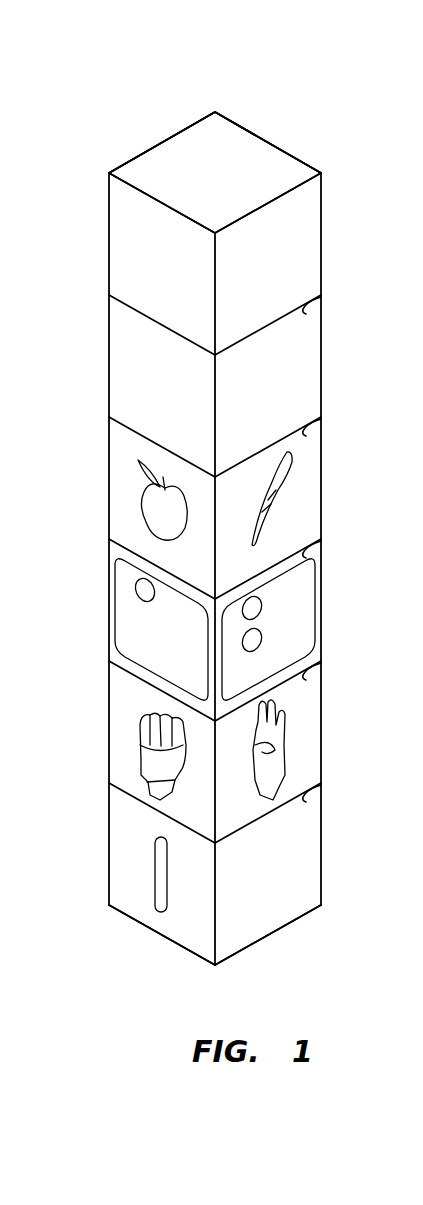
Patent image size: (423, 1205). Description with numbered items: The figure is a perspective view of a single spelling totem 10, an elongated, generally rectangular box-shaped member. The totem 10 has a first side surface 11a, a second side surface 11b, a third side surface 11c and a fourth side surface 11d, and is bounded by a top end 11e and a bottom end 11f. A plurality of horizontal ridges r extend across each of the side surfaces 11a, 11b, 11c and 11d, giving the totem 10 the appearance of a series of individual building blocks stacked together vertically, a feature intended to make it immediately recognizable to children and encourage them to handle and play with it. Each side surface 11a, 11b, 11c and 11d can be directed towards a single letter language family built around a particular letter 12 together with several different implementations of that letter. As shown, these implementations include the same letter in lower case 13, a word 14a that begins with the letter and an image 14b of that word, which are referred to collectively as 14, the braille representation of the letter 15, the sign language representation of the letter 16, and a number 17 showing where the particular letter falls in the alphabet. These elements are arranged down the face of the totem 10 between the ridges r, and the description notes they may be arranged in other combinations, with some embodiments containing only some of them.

The totem 10 is at (142, 63).
The first side surface 11a is at (130, 400).
The second side surface 11b is at (310, 365).
The third side surface 11c is at (265, 138).
The fourth side surface 11d is at (163, 138).
The top end 11e is at (225, 186).
The bottom end 11f is at (177, 947).
The letter 12 is at (143, 250).
The lower case letter 13 is at (145, 368).
The word and image 14 is at (215, 493).
The word 14a is at (215, 529).
The image 14b is at (148, 497).
The braille representation 15 is at (132, 657).
The sign language representation 16 is at (150, 760).
The number 17 is at (155, 875).
The horizontal ridges r is at (312, 316).